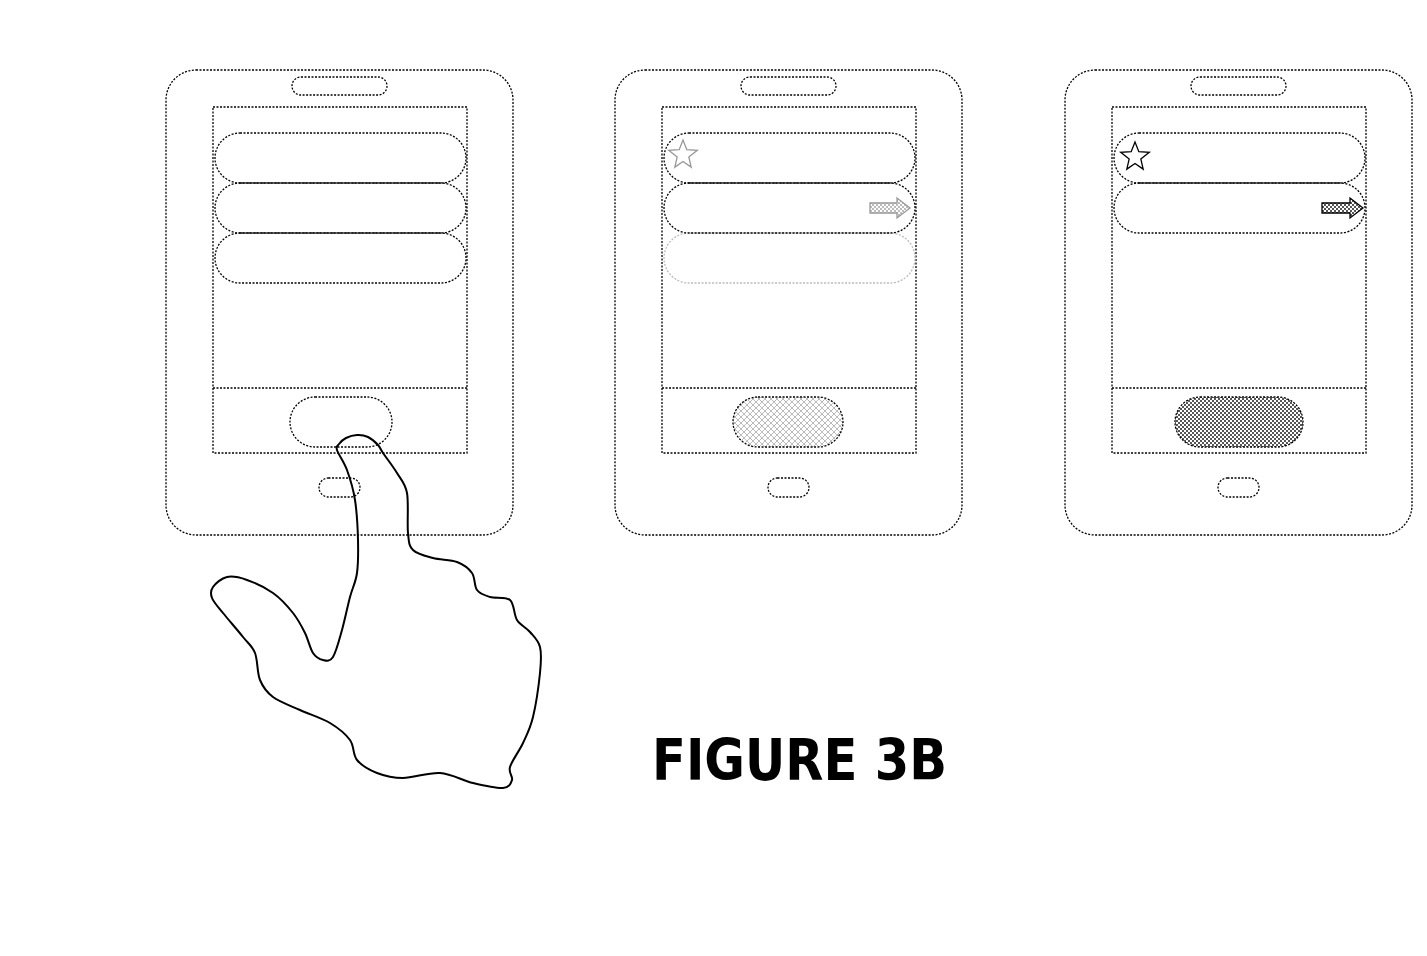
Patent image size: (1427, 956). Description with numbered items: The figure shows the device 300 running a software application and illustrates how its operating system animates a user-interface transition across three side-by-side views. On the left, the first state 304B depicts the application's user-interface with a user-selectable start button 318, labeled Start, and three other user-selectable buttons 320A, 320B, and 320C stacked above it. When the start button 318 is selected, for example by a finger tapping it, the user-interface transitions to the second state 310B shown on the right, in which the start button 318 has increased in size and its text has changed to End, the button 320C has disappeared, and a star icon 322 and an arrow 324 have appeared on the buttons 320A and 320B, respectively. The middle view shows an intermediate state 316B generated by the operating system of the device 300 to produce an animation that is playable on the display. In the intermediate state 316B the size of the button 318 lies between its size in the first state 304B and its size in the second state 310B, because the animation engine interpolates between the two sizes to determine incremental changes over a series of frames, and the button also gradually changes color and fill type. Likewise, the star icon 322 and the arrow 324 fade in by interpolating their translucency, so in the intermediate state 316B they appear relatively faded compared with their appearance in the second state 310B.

The device 300 is at (513, 138).
The first state 304B is at (373, 406).
The intermediate state 316B is at (788, 279).
The second state 310B is at (1238, 279).
The start button 318 is at (298, 403).
The user-selectable button 320A is at (790, 158).
The user-selectable button 320B is at (790, 208).
The user-selectable button 320C is at (340, 258).
The star icon 322 is at (683, 165).
The arrow 324 is at (880, 216).